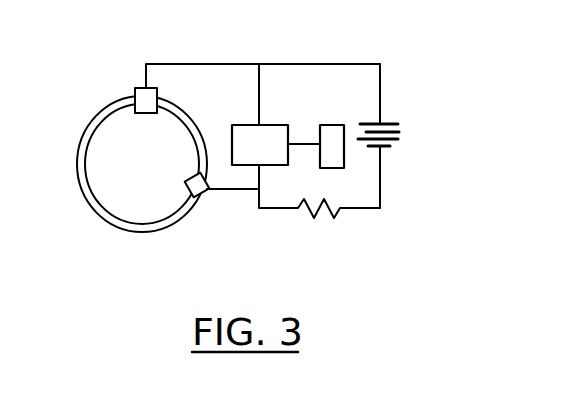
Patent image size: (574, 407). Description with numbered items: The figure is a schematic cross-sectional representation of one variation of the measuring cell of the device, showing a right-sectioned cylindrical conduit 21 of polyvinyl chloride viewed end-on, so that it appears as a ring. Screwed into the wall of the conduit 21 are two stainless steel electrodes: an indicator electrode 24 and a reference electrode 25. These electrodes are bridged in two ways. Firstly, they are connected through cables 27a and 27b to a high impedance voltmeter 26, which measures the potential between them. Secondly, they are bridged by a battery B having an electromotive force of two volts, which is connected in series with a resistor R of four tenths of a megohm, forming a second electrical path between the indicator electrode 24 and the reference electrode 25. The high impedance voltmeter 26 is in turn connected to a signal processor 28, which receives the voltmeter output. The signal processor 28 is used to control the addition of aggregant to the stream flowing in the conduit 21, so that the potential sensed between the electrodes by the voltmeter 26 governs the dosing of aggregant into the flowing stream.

The cylindrical conduit 21 is at (83, 183).
The indicator electrode 24 is at (141, 92).
The reference electrode 25 is at (202, 198).
The high impedance voltmeter 26 is at (242, 131).
The cable 27a is at (259, 78).
The cable 27b is at (259, 177).
The signal processor 28 is at (333, 131).
The resistor R is at (336, 228).
The battery B is at (392, 136).